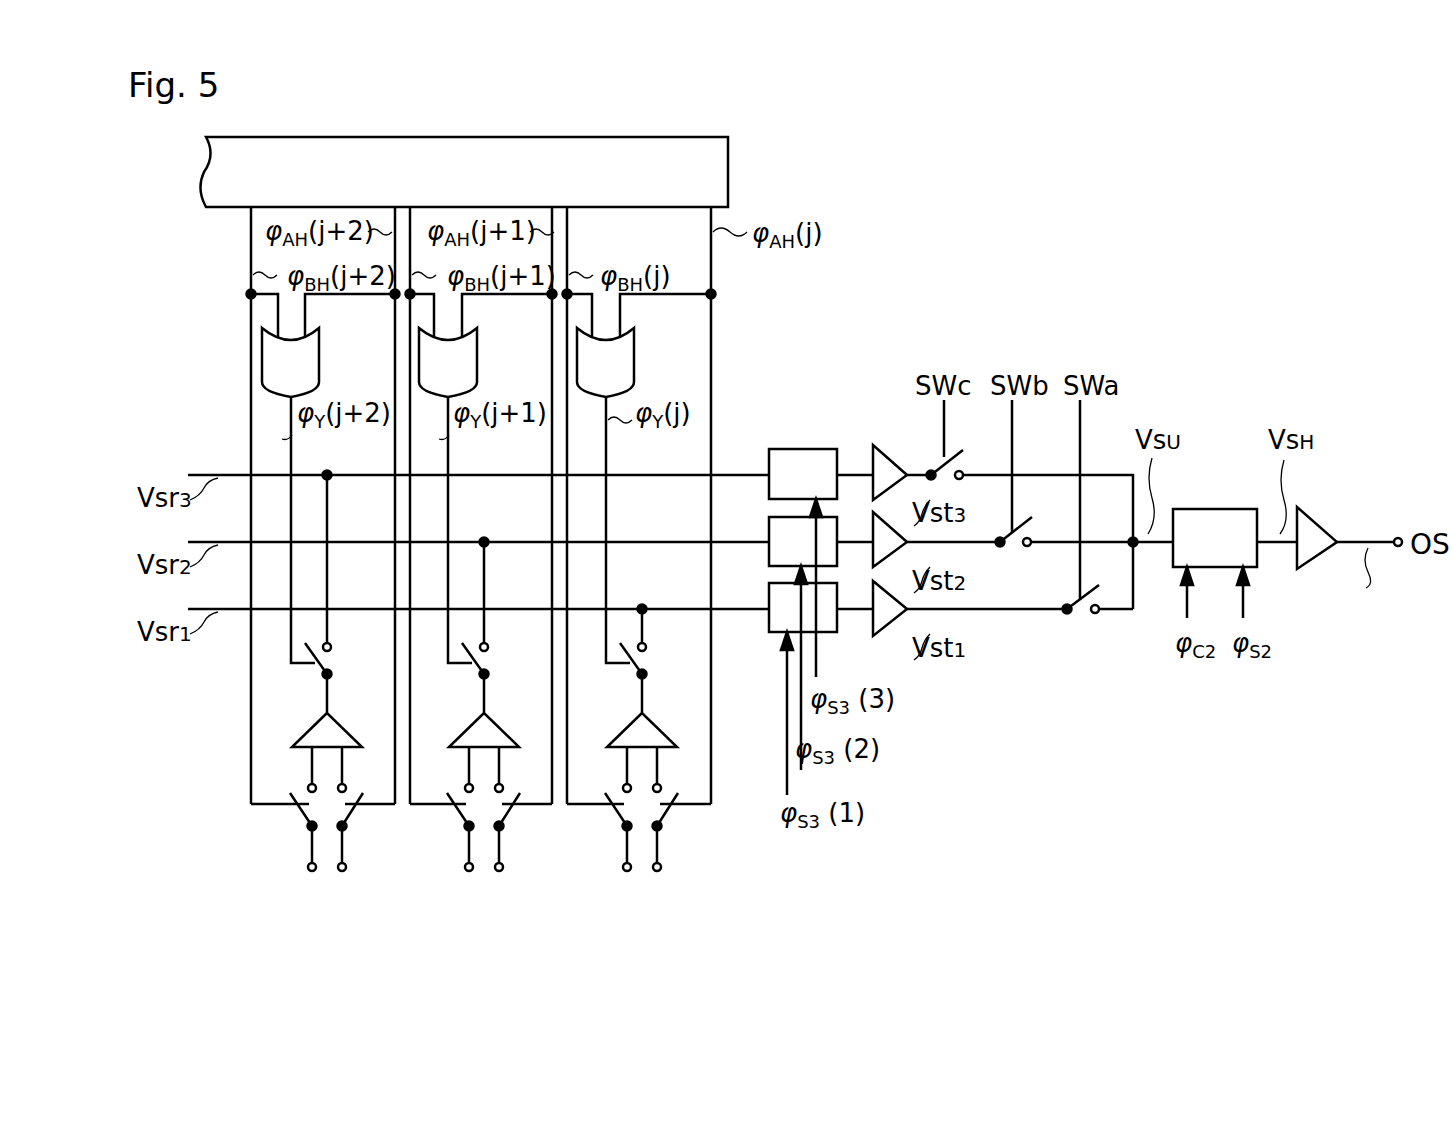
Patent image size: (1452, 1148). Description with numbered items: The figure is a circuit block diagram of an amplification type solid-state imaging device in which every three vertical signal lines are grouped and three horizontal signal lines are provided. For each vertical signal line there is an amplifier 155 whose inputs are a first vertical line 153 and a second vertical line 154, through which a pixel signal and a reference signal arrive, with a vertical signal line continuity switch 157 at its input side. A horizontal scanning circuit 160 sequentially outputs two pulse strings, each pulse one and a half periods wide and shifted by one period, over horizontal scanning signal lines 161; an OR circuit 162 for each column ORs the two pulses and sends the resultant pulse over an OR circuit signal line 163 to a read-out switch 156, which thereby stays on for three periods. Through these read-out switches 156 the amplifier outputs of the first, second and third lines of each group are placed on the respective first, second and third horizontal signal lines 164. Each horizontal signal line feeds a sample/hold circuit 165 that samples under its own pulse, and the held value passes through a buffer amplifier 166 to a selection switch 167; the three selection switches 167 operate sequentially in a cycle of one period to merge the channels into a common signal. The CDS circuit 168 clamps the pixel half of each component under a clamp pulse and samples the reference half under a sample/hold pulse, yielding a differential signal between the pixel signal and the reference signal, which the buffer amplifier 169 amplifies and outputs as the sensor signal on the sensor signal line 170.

The first vertical line 153 is at (657, 878).
The second vertical line 154 is at (627, 878).
The amplifier 155 is at (614, 740).
The read-out switch 156 is at (656, 657).
The vertical signal line continuity switch 157 is at (676, 816).
The horizontal scanning circuit 160 is at (730, 176).
The horizontal scanning signal line 161 is at (713, 282).
The OR circuit 162 is at (636, 354).
The OR circuit signal line 163 is at (608, 455).
The horizontal signal line 164 is at (738, 470).
The sample/hold circuit 165 is at (802, 448).
The buffer amplifier 166 is at (874, 446).
The selection switch 167 is at (952, 483).
The CDS circuit 168 is at (1214, 506).
The buffer amplifier 169 is at (1316, 512).
The sensor signal line 170 is at (1369, 580).